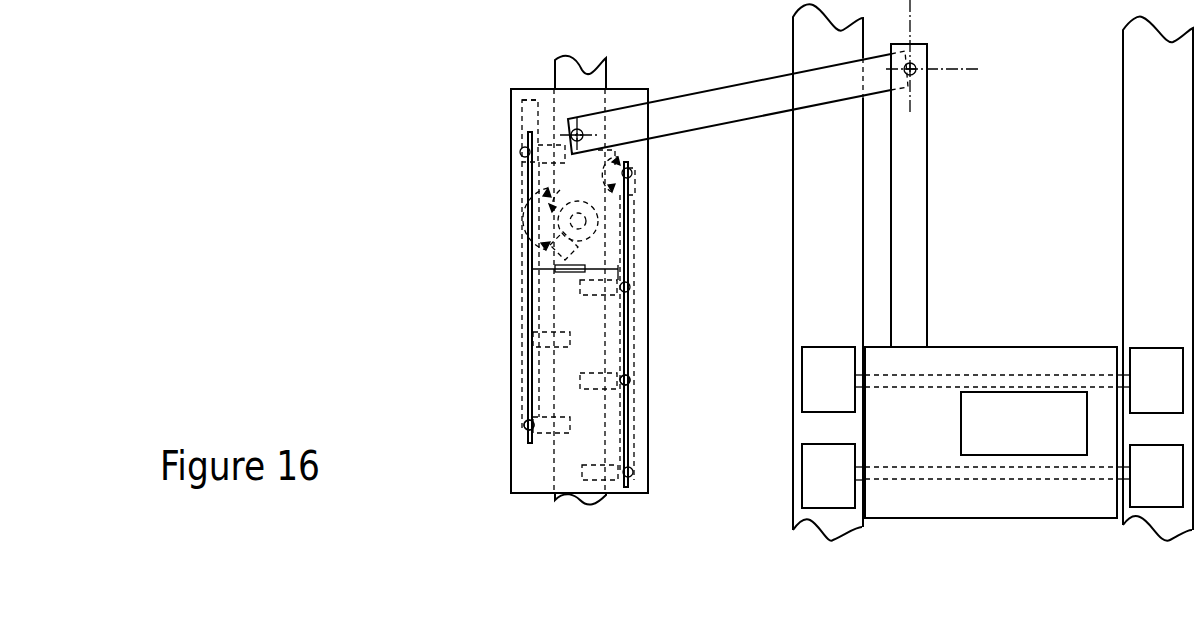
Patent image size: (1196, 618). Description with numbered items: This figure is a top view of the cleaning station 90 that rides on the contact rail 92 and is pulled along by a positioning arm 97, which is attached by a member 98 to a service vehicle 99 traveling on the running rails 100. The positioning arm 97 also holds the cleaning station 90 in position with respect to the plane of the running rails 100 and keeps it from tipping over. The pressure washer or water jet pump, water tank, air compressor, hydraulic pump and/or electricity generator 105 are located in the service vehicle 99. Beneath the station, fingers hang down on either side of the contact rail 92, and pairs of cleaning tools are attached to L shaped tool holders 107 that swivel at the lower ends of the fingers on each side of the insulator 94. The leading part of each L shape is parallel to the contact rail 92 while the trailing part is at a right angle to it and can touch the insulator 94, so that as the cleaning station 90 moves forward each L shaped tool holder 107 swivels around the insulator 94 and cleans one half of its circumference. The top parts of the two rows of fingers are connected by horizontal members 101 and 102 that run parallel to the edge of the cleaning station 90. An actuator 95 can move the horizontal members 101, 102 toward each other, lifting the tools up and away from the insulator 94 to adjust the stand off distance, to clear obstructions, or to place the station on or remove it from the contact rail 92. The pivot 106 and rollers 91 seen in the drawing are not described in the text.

The cleaning station 90 is at (509, 475).
The rollers 91 is at (526, 432).
The contact rail 92 is at (553, 79).
The insulator 94 is at (586, 228).
The actuator 95 is at (563, 272).
The positioning arm 97 is at (733, 114).
The member 98 is at (934, 240).
The service vehicle 99 is at (943, 346).
The running rails 100 is at (1151, 155).
The horizontal member 101 is at (530, 175).
The horizontal member 102 is at (629, 315).
The electricity generator 105 is at (1036, 390).
The pivot 106 is at (586, 132).
The L shaped tool holder 107 is at (600, 158).